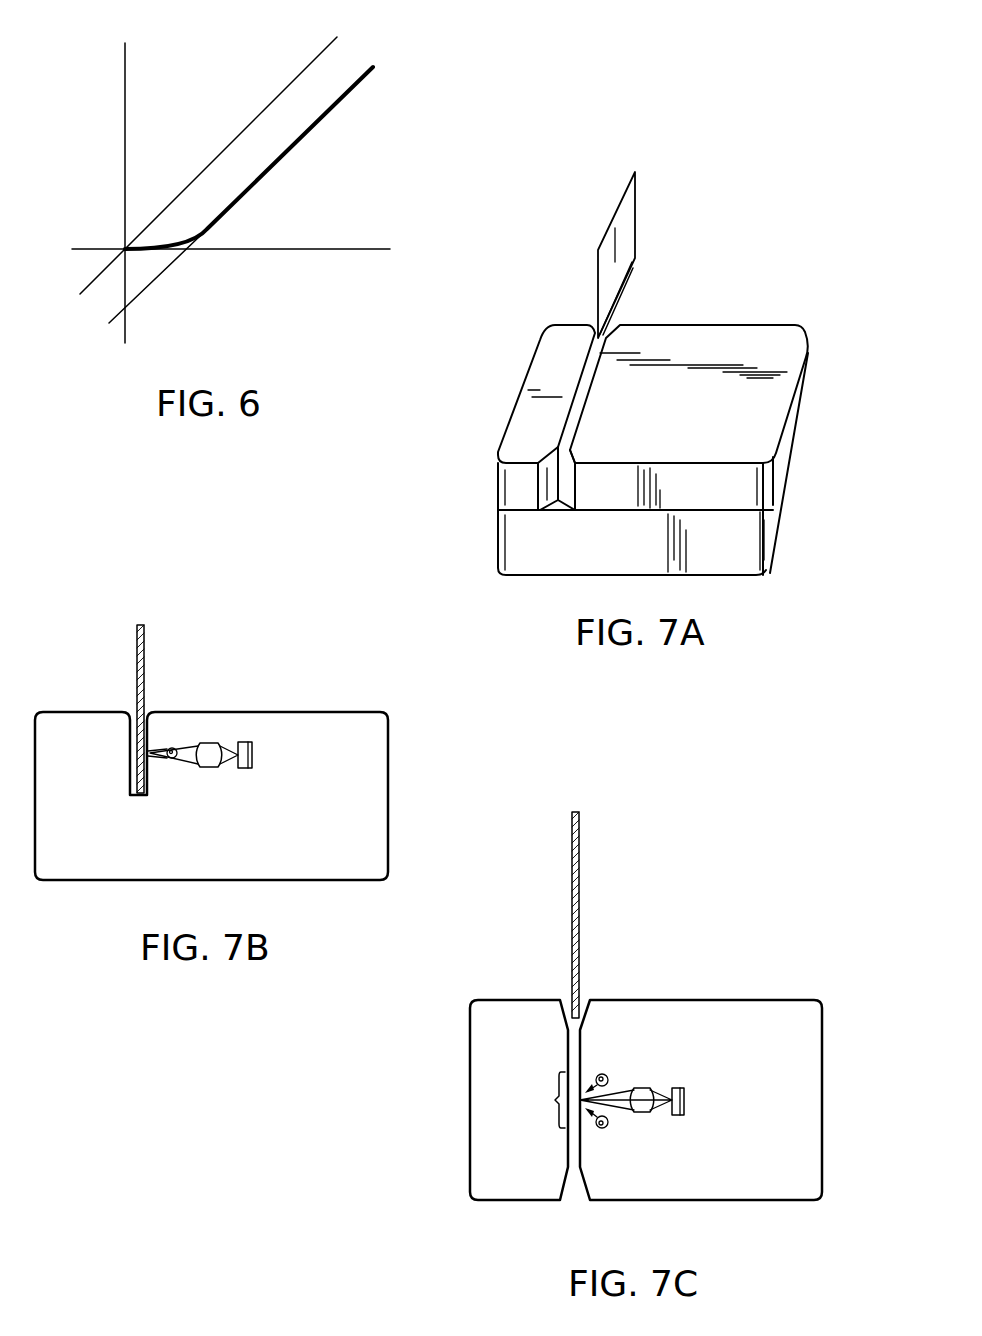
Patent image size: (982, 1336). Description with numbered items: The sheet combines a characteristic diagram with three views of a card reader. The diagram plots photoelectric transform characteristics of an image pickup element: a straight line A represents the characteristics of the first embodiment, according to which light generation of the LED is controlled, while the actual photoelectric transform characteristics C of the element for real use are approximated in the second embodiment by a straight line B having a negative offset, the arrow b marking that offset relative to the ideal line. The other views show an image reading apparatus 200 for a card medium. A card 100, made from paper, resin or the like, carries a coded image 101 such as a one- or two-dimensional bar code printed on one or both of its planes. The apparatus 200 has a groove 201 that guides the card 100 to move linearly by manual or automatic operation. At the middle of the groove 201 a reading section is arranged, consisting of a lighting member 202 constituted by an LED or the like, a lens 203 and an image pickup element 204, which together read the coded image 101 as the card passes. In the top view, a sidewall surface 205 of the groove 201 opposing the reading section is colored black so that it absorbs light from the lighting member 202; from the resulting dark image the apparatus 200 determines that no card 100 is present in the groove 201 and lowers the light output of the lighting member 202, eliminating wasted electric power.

In FIG. 6, the straight line A is at (212, 163).
In FIG. 6, the straight line B is at (158, 277).
In FIG. 6, the photoelectric transform characteristics C is at (187, 237).
In FIG. 6, the offset direction b is at (242, 222).
In FIG. 7A, the card 100 is at (635, 205).
In FIG. 7B, the card 100 is at (146, 652).
In FIG. 7C, the card 100 is at (580, 878).
In FIG. 7A, the coded image 101 is at (632, 263).
In FIG. 7A, the image reading apparatus 200 is at (772, 320).
In FIG. 7B, the image reading apparatus 200 is at (391, 709).
In FIG. 7C, the image reading apparatus 200 is at (831, 997).
In FIG. 7A, the groove 201 is at (588, 398).
In FIG. 7C, the groove 201 is at (573, 1188).
In FIG. 7B, the lighting member 202 is at (168, 760).
In FIG. 7C, the lighting member 202 is at (602, 1073).
In FIG. 7B, the lens 203 is at (210, 743).
In FIG. 7C, the lens 203 is at (642, 1088).
In FIG. 7B, the image pickup element 204 is at (253, 755).
In FIG. 7C, the image pickup element 204 is at (685, 1100).
In FIG. 7C, the sidewall surface 205 is at (553, 1099).